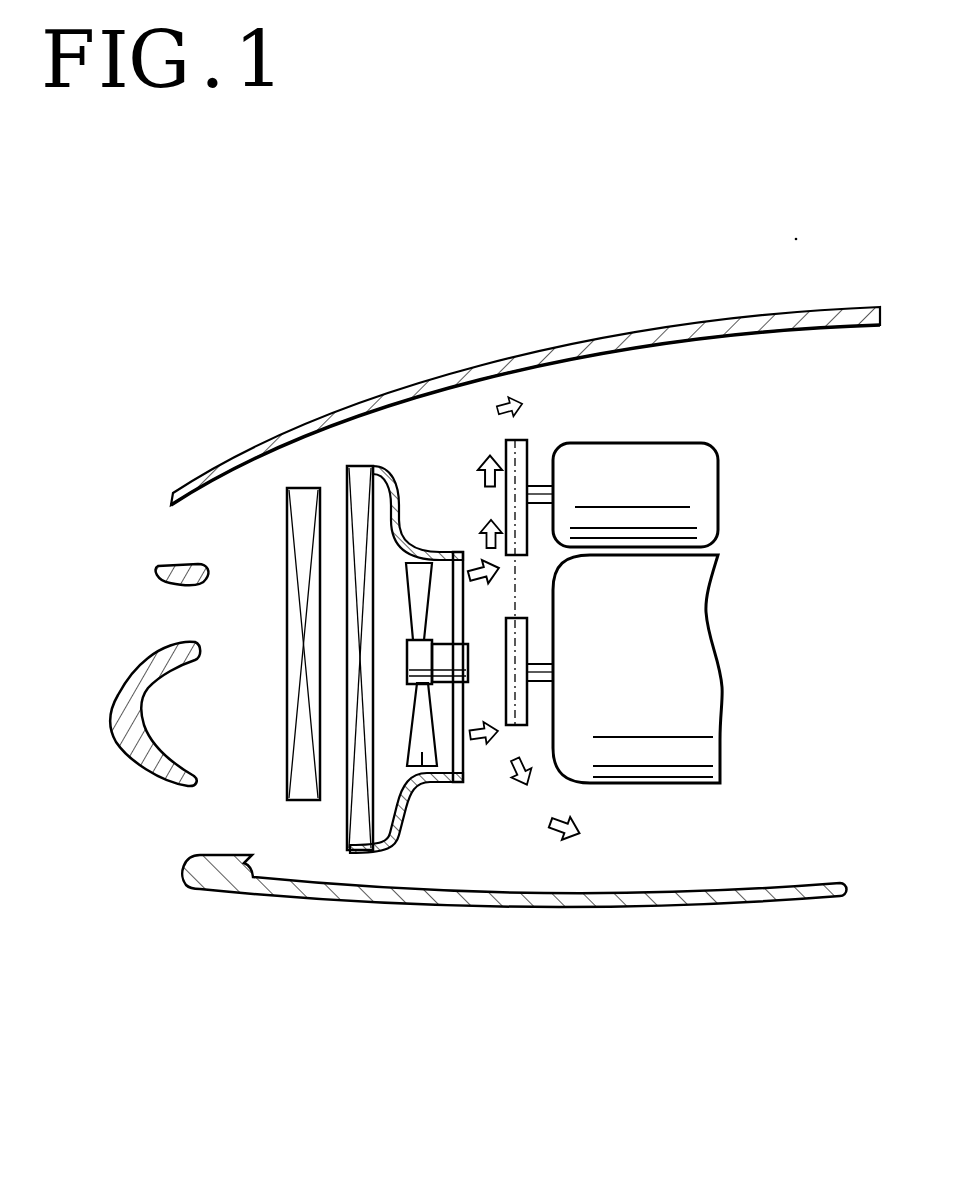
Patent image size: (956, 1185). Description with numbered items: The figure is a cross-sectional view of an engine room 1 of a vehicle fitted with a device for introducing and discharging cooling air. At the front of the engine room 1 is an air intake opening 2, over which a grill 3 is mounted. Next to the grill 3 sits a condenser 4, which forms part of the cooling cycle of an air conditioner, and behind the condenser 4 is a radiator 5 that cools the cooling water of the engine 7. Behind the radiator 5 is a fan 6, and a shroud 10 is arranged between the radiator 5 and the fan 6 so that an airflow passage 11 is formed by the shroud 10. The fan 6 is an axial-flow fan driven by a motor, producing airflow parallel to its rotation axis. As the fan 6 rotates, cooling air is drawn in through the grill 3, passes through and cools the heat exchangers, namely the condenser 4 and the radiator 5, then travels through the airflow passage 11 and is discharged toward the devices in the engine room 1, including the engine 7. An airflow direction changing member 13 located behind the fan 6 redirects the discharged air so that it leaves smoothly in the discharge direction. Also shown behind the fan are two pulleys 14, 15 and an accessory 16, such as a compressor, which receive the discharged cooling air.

The engine room 1 is at (395, 422).
The air intake opening 2 is at (193, 522).
The grill 3 is at (137, 672).
The condenser 4 is at (300, 507).
The radiator 5 is at (360, 490).
The fan 6 is at (390, 786).
The engine 7 is at (677, 750).
The shroud 10 is at (430, 545).
The airflow passage 11 is at (388, 783).
The airflow direction changing member 13 is at (470, 558).
The pulley 14 is at (509, 727).
The pulley 15 is at (528, 458).
The accessory 16 is at (682, 472).